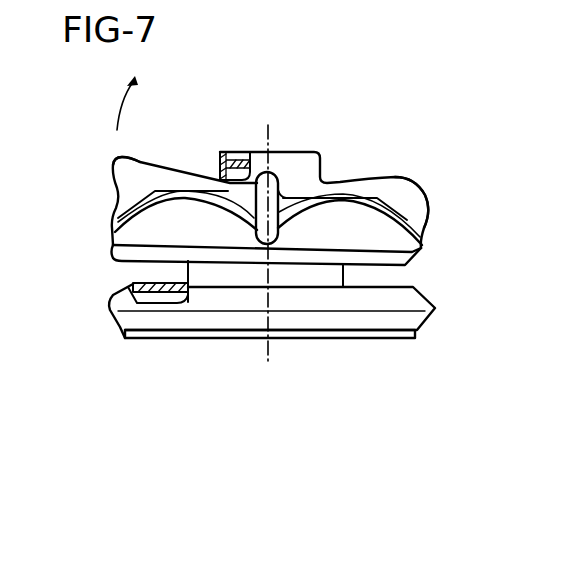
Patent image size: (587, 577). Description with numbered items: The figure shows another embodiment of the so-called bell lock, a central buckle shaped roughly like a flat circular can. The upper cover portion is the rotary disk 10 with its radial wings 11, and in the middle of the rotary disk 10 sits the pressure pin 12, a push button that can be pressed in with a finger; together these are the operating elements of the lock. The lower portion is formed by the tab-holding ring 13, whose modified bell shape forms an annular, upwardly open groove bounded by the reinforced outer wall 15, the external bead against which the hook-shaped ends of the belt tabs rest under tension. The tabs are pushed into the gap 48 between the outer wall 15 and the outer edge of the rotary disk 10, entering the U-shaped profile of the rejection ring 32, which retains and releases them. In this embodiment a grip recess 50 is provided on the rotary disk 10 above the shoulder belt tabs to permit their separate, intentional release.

The rotary disk 10 is at (437, 189).
The radial wings 11 is at (425, 212).
The pressure pin 12 is at (270, 123).
The tab-holding ring 13 is at (432, 313).
The outer wall 15 is at (115, 297).
The rejection ring 32 is at (168, 303).
The gap 48 is at (167, 268).
The grip recess 50 is at (118, 168).